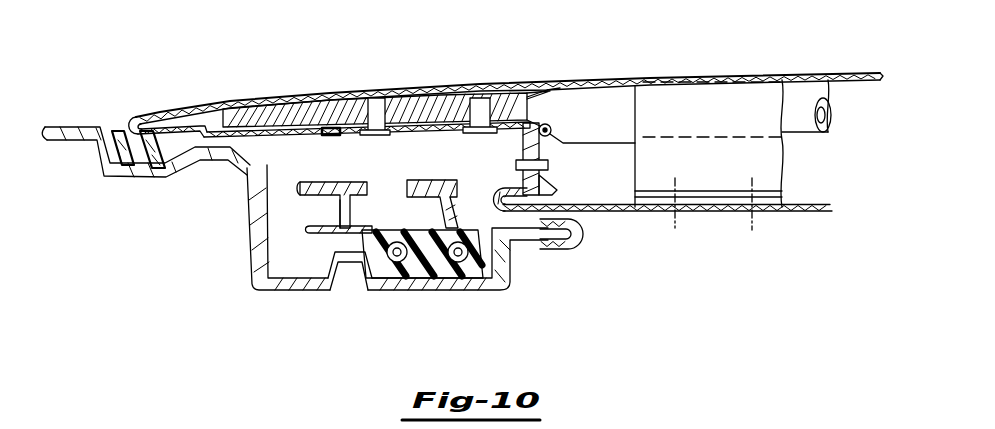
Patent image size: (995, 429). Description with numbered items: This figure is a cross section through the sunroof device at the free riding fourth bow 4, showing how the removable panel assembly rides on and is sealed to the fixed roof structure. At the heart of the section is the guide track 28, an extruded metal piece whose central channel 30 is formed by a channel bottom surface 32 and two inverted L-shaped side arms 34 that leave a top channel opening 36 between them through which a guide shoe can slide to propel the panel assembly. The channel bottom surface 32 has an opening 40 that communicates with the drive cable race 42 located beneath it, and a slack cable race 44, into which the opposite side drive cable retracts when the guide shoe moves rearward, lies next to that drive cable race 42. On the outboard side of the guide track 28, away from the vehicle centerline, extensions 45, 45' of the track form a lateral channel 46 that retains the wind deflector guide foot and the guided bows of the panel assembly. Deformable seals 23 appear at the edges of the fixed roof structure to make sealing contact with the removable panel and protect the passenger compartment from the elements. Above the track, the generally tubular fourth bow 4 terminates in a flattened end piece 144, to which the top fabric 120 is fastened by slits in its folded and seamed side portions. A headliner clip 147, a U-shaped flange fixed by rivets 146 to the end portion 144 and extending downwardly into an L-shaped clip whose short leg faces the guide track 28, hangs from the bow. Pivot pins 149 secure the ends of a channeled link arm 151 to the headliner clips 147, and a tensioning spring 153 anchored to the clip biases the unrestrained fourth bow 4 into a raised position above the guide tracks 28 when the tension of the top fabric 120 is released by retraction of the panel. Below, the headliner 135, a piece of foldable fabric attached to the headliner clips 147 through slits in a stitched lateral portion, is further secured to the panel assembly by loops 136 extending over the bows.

The fourth bow 4 is at (428, 104).
The deformable seal 23 is at (141, 163).
The guide track 28 is at (332, 271).
The central channel 30 is at (420, 224).
The channel bottom surface 32 is at (340, 192).
The side arm 34 is at (363, 257).
The top channel opening 36 is at (385, 212).
The opening 40 is at (353, 285).
The drive cable race 42 is at (397, 275).
The slack cable race 44 is at (459, 275).
The extension 45 is at (324, 243).
The extension 45' is at (287, 173).
The lateral channel 46 is at (327, 213).
The top fabric 120 is at (580, 73).
The headliner 135 is at (690, 212).
The loop 136 is at (768, 152).
The flattened end piece 144 is at (500, 100).
The rivet 146 is at (374, 100).
The headliner clip 147 is at (580, 212).
The pivot pin 149 is at (548, 168).
The channeled link arm 151 is at (550, 184).
The tensioning spring 153 is at (552, 126).